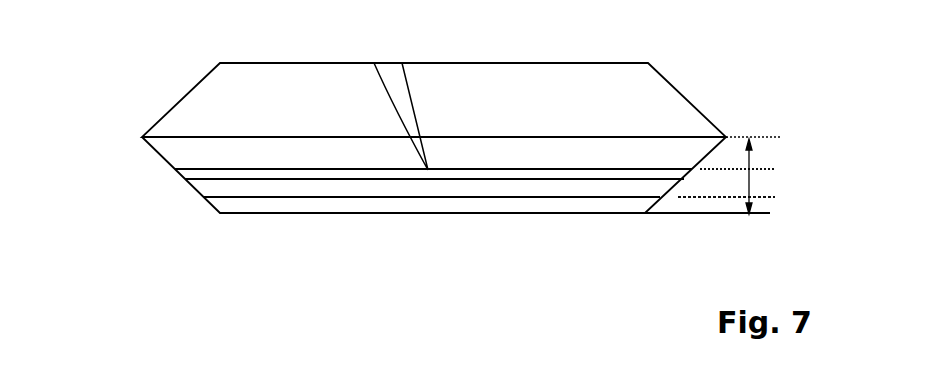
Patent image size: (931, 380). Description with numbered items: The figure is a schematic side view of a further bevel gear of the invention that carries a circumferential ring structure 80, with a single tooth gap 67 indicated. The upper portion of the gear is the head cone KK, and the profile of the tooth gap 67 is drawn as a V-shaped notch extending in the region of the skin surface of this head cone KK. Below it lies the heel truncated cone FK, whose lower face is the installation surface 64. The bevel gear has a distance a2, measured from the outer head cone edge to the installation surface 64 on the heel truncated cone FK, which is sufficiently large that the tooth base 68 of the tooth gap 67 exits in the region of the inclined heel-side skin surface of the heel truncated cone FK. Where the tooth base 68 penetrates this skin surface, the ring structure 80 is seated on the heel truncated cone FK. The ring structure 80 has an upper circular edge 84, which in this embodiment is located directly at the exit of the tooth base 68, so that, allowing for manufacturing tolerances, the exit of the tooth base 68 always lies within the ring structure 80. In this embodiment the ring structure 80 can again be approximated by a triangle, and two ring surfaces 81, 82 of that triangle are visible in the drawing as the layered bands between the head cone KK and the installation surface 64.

The installation surface 64 is at (325, 213).
The tooth gap 67 is at (383, 80).
The tooth base 68 is at (432, 166).
The circumferential ring structure 80 is at (783, 170).
The ring surface 81 is at (176, 173).
The ring surface 82 is at (200, 188).
The upper circular edge 84 is at (555, 168).
The head cone KK is at (138, 62).
The heel truncated cone FK is at (138, 139).
The distance a2 is at (741, 176).